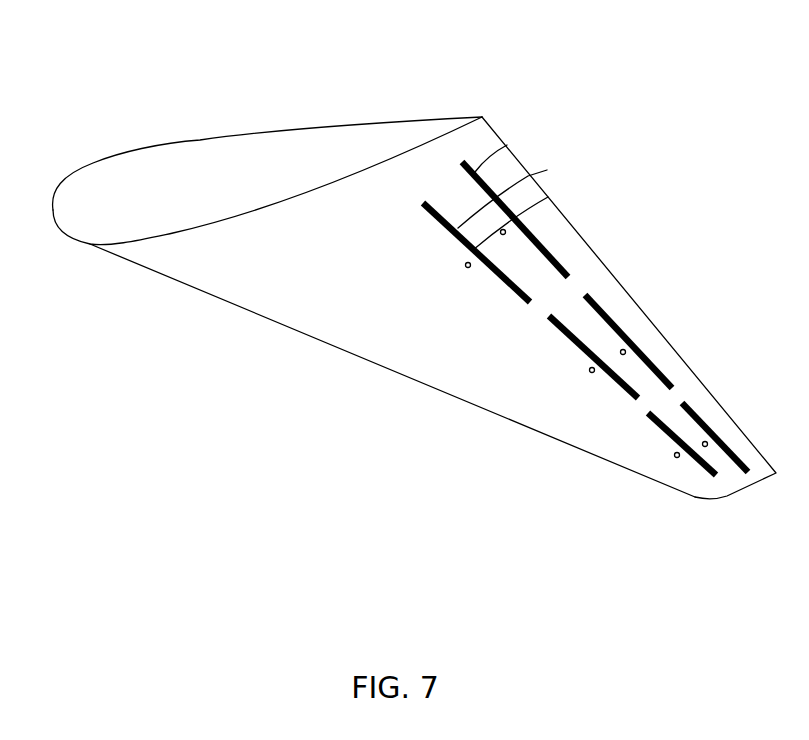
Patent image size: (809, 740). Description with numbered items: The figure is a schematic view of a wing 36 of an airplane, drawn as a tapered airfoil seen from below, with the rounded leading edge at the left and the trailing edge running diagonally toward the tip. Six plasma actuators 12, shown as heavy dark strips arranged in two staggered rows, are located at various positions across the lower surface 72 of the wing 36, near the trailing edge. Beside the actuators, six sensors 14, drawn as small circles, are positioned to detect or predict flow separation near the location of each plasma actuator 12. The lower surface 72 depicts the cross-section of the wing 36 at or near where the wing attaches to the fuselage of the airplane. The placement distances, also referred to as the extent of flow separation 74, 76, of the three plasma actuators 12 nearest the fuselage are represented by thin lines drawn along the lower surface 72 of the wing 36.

The wing 36 is at (163, 168).
The lower surface 72 is at (315, 283).
The extent of flow separation 74 is at (499, 152).
The extent of flow separation 76 is at (518, 178).
The plasma actuator 12 is at (540, 242).
The sensor 14 is at (546, 195).